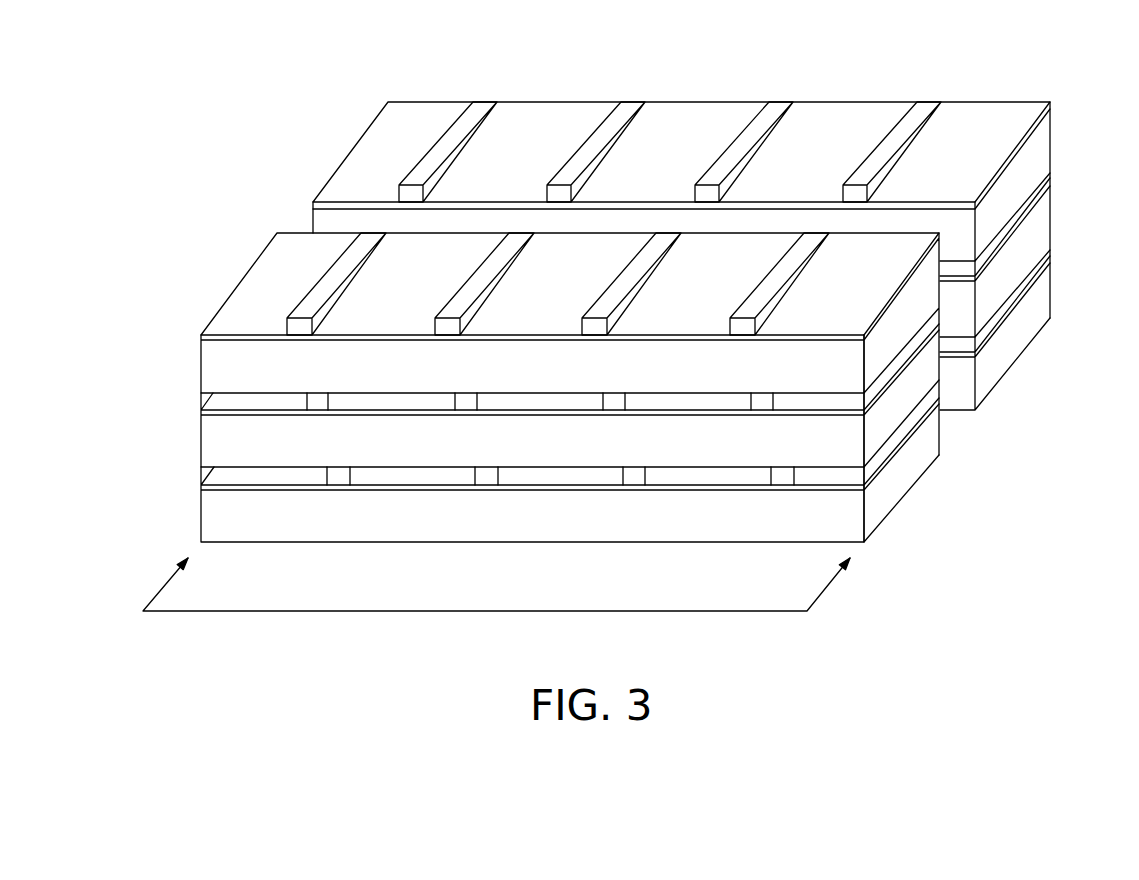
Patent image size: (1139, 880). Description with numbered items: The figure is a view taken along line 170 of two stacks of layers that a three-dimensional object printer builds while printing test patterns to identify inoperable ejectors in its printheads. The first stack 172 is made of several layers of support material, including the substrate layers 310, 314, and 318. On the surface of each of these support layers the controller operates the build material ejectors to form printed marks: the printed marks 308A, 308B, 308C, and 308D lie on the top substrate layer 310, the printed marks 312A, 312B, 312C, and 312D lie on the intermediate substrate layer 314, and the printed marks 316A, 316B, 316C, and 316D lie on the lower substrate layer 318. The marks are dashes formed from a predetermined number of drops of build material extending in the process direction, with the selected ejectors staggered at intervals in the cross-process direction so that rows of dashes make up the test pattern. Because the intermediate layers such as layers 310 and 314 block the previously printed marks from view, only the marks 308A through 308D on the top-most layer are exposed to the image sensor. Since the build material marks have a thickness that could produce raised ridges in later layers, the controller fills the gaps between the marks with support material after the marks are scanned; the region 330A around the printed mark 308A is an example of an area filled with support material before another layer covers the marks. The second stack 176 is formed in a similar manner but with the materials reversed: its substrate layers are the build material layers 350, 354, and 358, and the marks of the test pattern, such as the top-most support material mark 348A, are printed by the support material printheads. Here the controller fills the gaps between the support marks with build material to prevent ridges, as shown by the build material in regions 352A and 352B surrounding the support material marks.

The line 170 is at (497, 613).
The stack 172 is at (864, 544).
The second stack 176 is at (1037, 112).
The printed mark 308A is at (370, 232).
The printed mark 308B is at (511, 232).
The printed mark 308C is at (659, 232).
The printed mark 308D is at (807, 232).
The substrate layer 310 is at (201, 365).
The printed mark 312A is at (318, 405).
The printed mark 312B is at (466, 405).
The printed mark 312C is at (614, 405).
The printed mark 312D is at (762, 405).
The substrate layer 314 is at (201, 443).
The printed mark 316A is at (338, 479).
The printed mark 316B is at (486, 479).
The printed mark 316C is at (634, 479).
The printed mark 316D is at (782, 479).
The substrate layer 318 is at (201, 518).
The region 330A is at (262, 270).
The support material mark 348A is at (483, 95).
The layer of build material 350 is at (1045, 152).
The region 352A is at (388, 125).
The region 352B is at (542, 100).
The layer of build material 354 is at (1045, 222).
The layer of build material 358 is at (1045, 302).